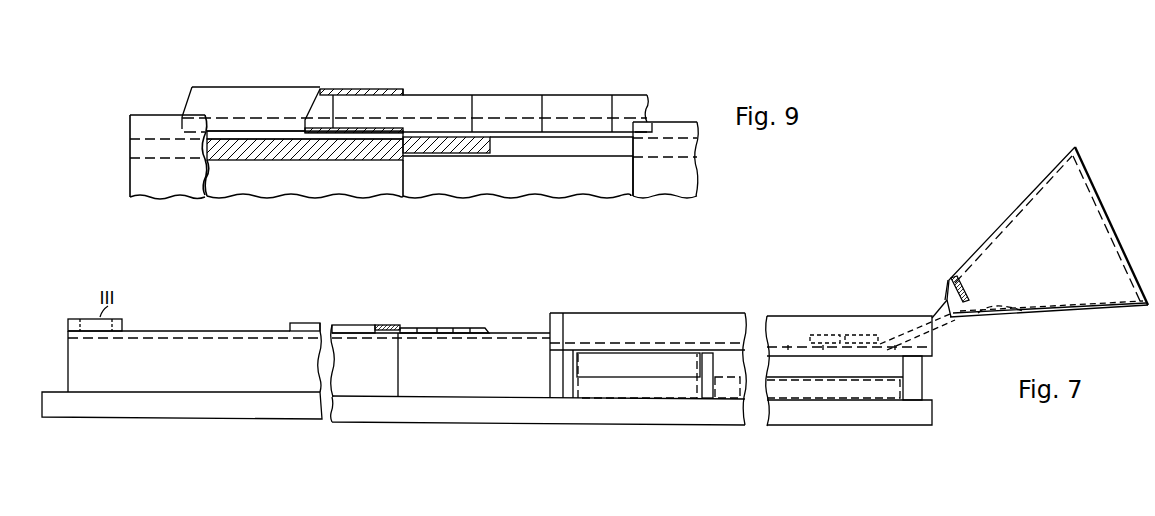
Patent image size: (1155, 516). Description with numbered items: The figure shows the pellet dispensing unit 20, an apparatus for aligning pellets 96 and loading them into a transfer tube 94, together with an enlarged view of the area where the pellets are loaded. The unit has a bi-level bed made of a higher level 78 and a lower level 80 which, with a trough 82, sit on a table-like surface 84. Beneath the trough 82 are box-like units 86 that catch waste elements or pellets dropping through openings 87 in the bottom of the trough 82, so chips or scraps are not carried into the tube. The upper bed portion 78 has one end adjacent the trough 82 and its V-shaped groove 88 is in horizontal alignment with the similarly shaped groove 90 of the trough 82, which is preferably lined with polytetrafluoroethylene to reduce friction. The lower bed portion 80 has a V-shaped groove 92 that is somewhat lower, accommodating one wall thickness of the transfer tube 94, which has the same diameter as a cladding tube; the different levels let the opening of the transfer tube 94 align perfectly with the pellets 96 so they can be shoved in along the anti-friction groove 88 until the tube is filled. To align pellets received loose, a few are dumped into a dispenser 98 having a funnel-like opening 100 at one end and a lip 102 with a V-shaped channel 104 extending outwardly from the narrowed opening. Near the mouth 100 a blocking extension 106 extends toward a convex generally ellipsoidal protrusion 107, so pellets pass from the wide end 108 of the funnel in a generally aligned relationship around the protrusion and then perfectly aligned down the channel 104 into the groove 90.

In FIG. 7, the pellet dispensing unit 20 is at (497, 423).
In FIG. 9, the higher level (upper bed portion) 78 is at (469, 150).
In FIG. 7, the higher level (upper bed portion) 78 is at (433, 388).
In FIG. 9, the lower level (lower bed portion) 80 is at (310, 152).
In FIG. 7, the lower level (lower bed portion) 80 is at (237, 387).
In FIG. 9, the trough 82 is at (687, 178).
In FIG. 7, the trough 82 is at (680, 320).
In FIG. 7, the table-like surface 84 is at (811, 415).
In FIG. 7, the box-like units 86 is at (622, 388).
In FIG. 7, the openings (holes) 87 is at (645, 350).
In FIG. 9, the V-shaped groove 88 is at (597, 137).
In FIG. 7, the V-shaped groove 88 is at (503, 340).
In FIG. 9, the groove 90 is at (670, 128).
In FIG. 7, the groove 90 is at (563, 335).
In FIG. 9, the V-shaped groove 92 is at (245, 140).
In FIG. 7, the V-shaped groove 92 is at (180, 334).
In FIG. 9, the transfer tube (transfer cartridge) 94 is at (242, 88).
In FIG. 7, the transfer tube (transfer cartridge) 94 is at (357, 324).
In FIG. 9, the pellets 96 is at (433, 97).
In FIG. 7, the pellets 96 is at (428, 326).
In FIG. 7, the dispenser 98 is at (1023, 211).
In FIG. 7, the funnel-like opening (mouth) 100 is at (940, 290).
In FIG. 7, the lip 102 is at (893, 328).
In FIG. 7, the V-shaped channel 104 is at (947, 323).
In FIG. 7, the blocking extension 106 is at (965, 286).
In FIG. 7, the convex generally ellipsoidal protrusion 107 is at (1014, 302).
In FIG. 7, the wide end 108 is at (1100, 200).